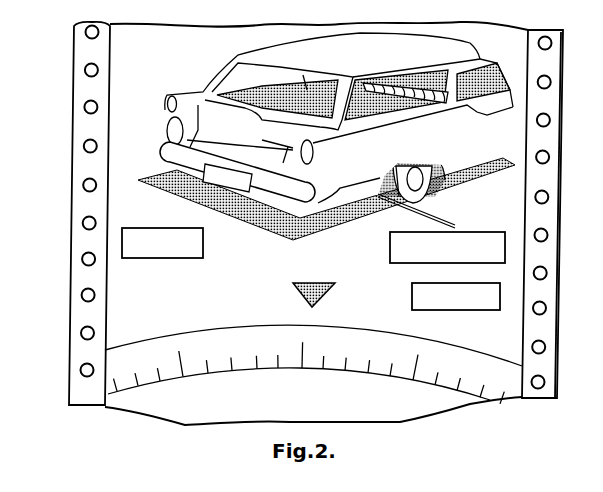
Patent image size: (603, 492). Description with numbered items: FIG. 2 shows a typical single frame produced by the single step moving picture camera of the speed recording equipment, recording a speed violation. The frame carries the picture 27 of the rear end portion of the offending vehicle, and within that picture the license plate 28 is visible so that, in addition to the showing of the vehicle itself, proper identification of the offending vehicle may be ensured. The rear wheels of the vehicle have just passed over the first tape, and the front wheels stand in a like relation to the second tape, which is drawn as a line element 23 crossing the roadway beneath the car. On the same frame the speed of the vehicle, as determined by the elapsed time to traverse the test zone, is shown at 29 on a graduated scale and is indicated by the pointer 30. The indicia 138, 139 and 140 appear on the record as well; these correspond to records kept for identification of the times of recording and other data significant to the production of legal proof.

The picture 27 is at (152, 116).
The license plate 28 is at (207, 192).
The pointer rod 23 is at (432, 213).
The indicia 138 is at (152, 256).
The indicia 140 is at (390, 261).
The indicia 139 is at (466, 311).
The pointer 30 is at (325, 292).
The speed showing 29 is at (292, 390).